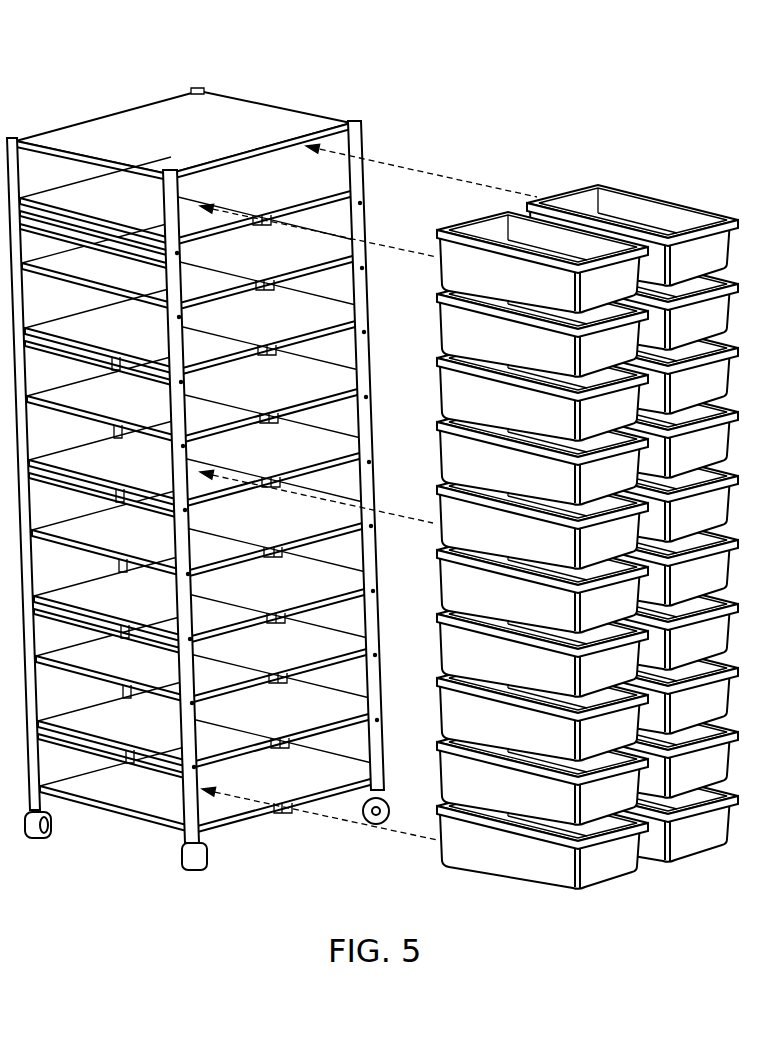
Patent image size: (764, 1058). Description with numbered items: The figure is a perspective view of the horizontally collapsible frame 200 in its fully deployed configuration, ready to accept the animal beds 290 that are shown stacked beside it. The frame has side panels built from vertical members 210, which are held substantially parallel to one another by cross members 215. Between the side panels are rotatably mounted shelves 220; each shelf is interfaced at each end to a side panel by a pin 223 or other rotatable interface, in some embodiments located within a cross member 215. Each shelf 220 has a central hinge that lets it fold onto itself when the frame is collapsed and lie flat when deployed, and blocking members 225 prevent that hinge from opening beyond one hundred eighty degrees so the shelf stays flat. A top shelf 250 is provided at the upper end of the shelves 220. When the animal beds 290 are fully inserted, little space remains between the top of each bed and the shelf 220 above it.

The horizontally collapsible frame 200 is at (224, 456).
The vertical members 210 is at (359, 155).
The cross members 215 is at (330, 336).
The shelves 220 is at (320, 264).
The pin 223 is at (378, 658).
The blocking members 225 is at (262, 102).
The top shelf 250 is at (167, 122).
The animal beds 290 is at (528, 862).